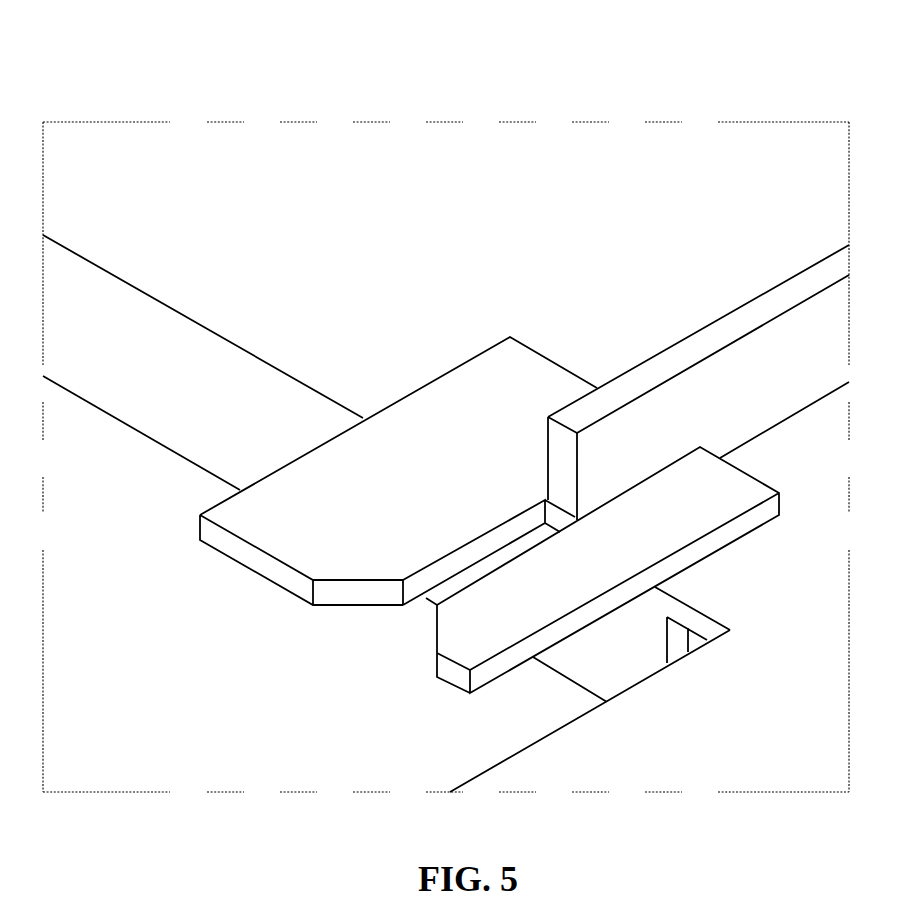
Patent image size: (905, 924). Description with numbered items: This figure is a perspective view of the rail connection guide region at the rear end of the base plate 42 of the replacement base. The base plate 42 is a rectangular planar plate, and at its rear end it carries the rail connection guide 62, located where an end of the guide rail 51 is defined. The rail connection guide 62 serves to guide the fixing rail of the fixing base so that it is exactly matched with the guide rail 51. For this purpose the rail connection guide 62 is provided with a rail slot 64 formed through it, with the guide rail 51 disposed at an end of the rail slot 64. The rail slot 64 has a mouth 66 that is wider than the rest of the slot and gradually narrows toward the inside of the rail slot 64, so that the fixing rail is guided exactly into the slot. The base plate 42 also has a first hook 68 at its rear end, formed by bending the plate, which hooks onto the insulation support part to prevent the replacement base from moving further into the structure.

The base plate 42 is at (438, 168).
The guide rail 51 is at (778, 296).
The rail connection guide 62 is at (237, 545).
The rail slot 64 is at (463, 576).
The mouth 66 is at (420, 620).
The first hook 68 is at (117, 398).